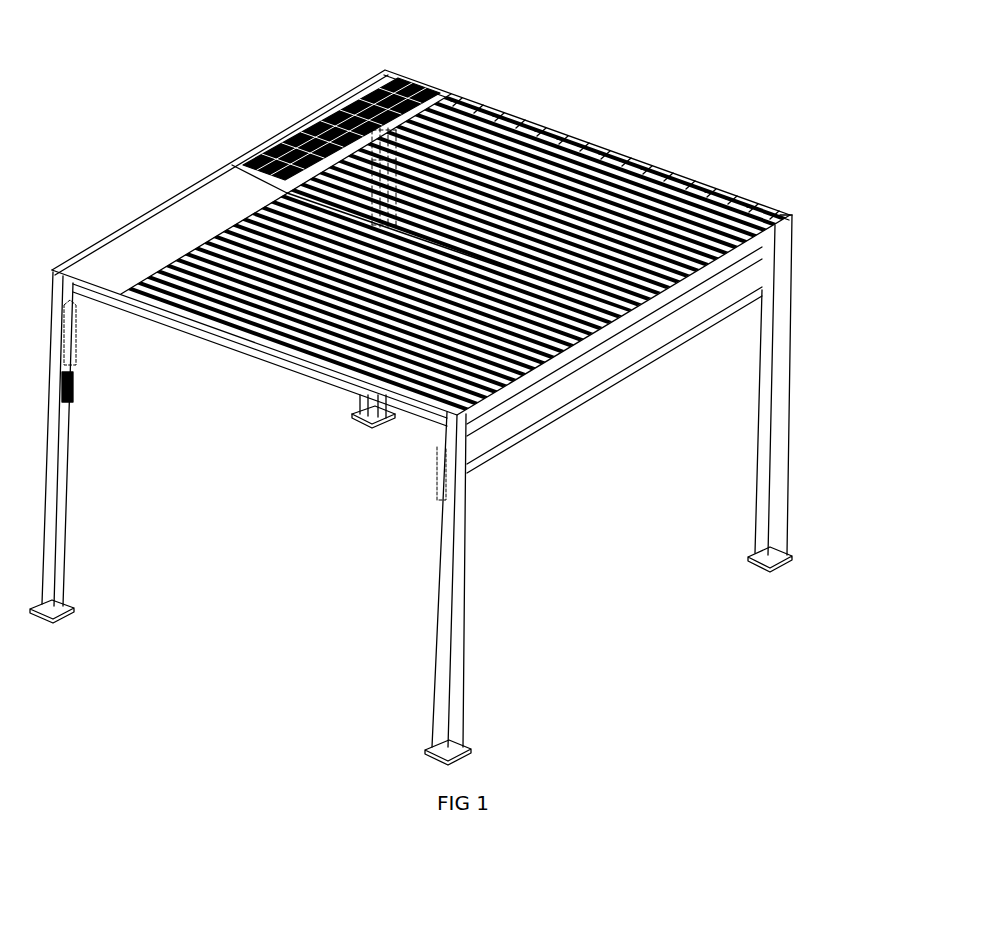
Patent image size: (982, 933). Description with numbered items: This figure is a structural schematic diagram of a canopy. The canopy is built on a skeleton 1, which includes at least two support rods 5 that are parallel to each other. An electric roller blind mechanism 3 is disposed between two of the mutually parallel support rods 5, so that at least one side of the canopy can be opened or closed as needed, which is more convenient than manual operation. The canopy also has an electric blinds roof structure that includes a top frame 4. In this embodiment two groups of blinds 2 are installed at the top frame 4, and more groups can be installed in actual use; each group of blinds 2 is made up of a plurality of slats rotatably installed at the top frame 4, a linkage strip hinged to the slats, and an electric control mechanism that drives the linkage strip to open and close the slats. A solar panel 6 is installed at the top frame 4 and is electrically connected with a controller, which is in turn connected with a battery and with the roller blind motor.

The skeleton 1 is at (803, 243).
The blinds 2 is at (620, 152).
The electric roller blind mechanism 3 is at (657, 338).
The top frame 4 is at (425, 403).
The support rods 5 is at (450, 583).
The solar panel 6 is at (348, 88).